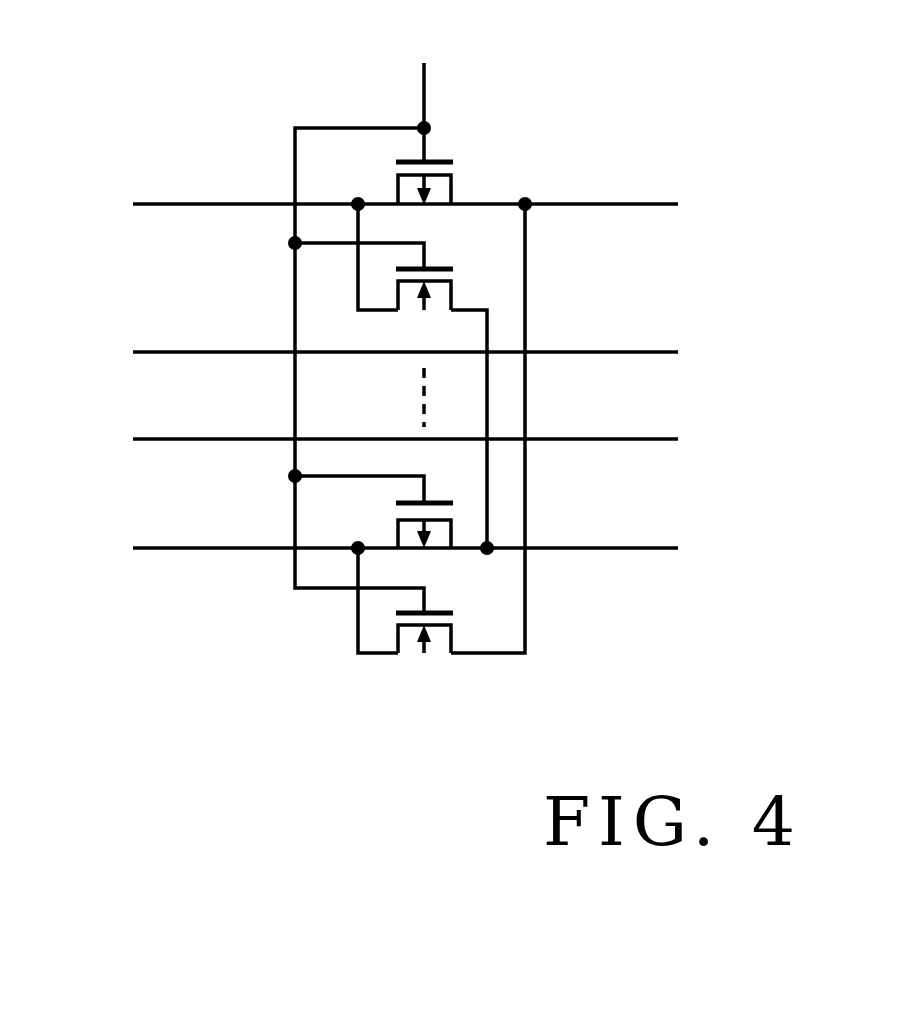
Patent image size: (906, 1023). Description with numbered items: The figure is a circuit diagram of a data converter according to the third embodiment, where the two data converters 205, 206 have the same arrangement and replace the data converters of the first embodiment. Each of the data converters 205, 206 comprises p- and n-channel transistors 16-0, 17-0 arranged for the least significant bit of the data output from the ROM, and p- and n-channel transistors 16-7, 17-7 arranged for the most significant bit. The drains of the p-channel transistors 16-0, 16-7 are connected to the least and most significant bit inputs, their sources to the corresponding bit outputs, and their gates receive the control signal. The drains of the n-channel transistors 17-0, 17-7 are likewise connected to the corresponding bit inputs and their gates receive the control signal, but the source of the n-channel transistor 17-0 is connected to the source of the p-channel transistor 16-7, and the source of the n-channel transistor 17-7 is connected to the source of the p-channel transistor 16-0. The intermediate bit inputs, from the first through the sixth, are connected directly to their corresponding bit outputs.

The p-channel transistor 16-0 is at (455, 172).
The n-channel transistor 17-0 is at (457, 274).
The p-channel transistor 16-7 is at (457, 509).
The n-channel transistor 17-7 is at (457, 617).
The data converter 205 is at (409, 327).
The data converter 206 is at (409, 327).